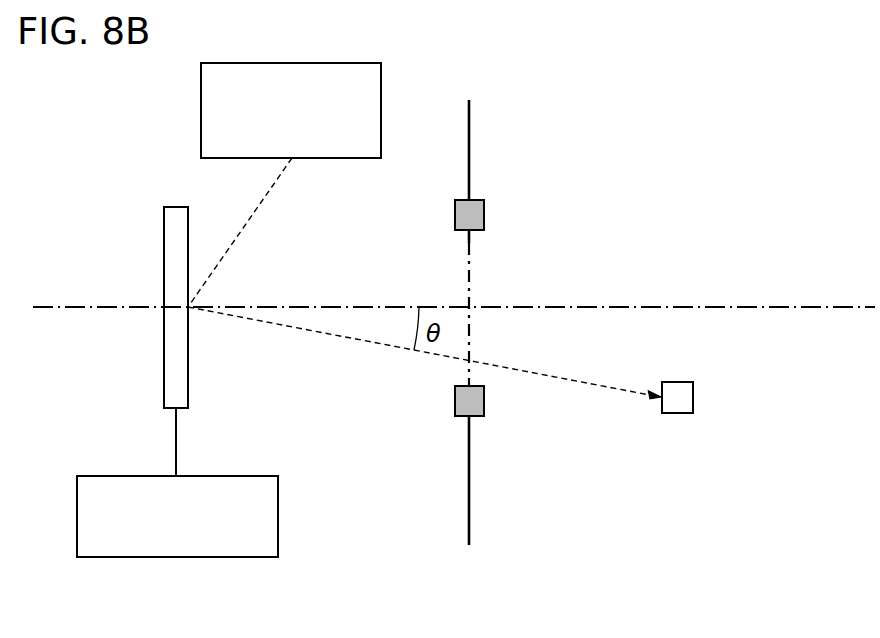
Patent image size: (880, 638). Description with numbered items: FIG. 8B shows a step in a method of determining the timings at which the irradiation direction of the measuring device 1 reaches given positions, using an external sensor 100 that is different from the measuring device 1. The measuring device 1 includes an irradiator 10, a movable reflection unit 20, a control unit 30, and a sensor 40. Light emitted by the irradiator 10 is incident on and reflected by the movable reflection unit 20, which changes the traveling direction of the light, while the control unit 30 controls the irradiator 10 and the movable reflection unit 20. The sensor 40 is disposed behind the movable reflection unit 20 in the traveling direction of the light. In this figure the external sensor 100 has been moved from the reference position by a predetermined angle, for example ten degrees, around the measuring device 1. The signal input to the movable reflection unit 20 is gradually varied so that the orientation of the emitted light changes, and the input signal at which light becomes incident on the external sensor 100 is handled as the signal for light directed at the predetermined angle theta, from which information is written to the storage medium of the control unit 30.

The measuring device 1 is at (683, 52).
The irradiator 10 is at (201, 107).
The movable reflection unit 20 is at (164, 253).
The control unit 30 is at (217, 557).
The sensor 40 is at (484, 213).
The external sensor 100 is at (693, 397).